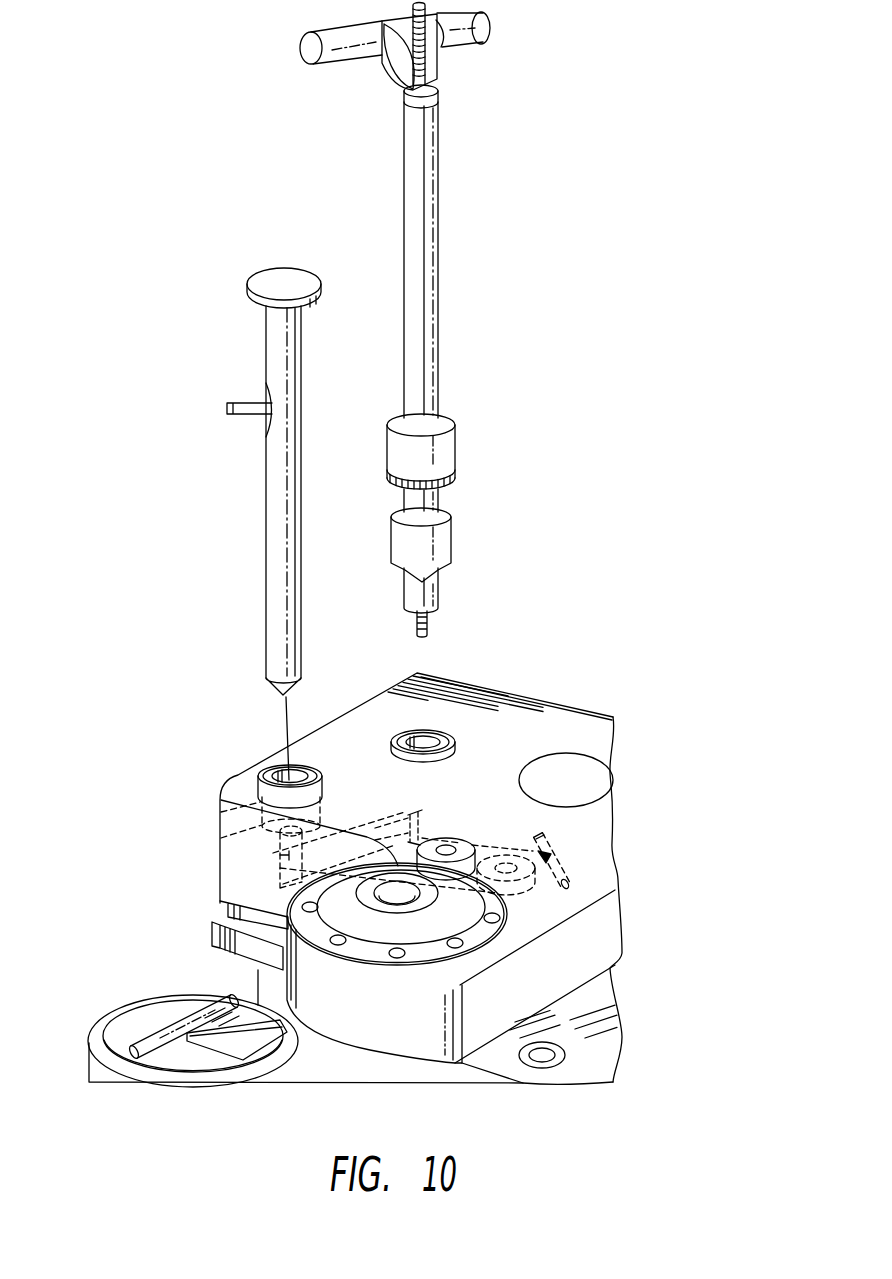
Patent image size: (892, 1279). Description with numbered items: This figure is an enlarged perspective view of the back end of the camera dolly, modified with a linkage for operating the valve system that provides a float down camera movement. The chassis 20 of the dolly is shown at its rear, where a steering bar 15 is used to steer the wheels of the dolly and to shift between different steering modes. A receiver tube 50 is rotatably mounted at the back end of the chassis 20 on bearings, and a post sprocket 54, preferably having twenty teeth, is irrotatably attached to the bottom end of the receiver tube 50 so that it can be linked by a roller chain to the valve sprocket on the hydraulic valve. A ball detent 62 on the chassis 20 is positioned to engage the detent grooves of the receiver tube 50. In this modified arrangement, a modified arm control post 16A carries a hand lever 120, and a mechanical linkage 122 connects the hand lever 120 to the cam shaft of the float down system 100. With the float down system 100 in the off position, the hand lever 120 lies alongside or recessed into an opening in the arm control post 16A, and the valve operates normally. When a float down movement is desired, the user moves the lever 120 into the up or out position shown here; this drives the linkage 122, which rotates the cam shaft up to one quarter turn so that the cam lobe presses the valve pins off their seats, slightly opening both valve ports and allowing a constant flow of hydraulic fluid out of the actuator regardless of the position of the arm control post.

The steering bar 15 is at (427, 178).
The modified arm control post 16A is at (224, 524).
The hand lever 120 is at (238, 415).
The receiver tube 50 is at (280, 781).
The chassis 20 is at (413, 857).
The ball detent 62 is at (226, 803).
The post sprocket 54 is at (252, 851).
The mechanical linkage 122 is at (401, 808).
The float down system 100 is at (549, 856).